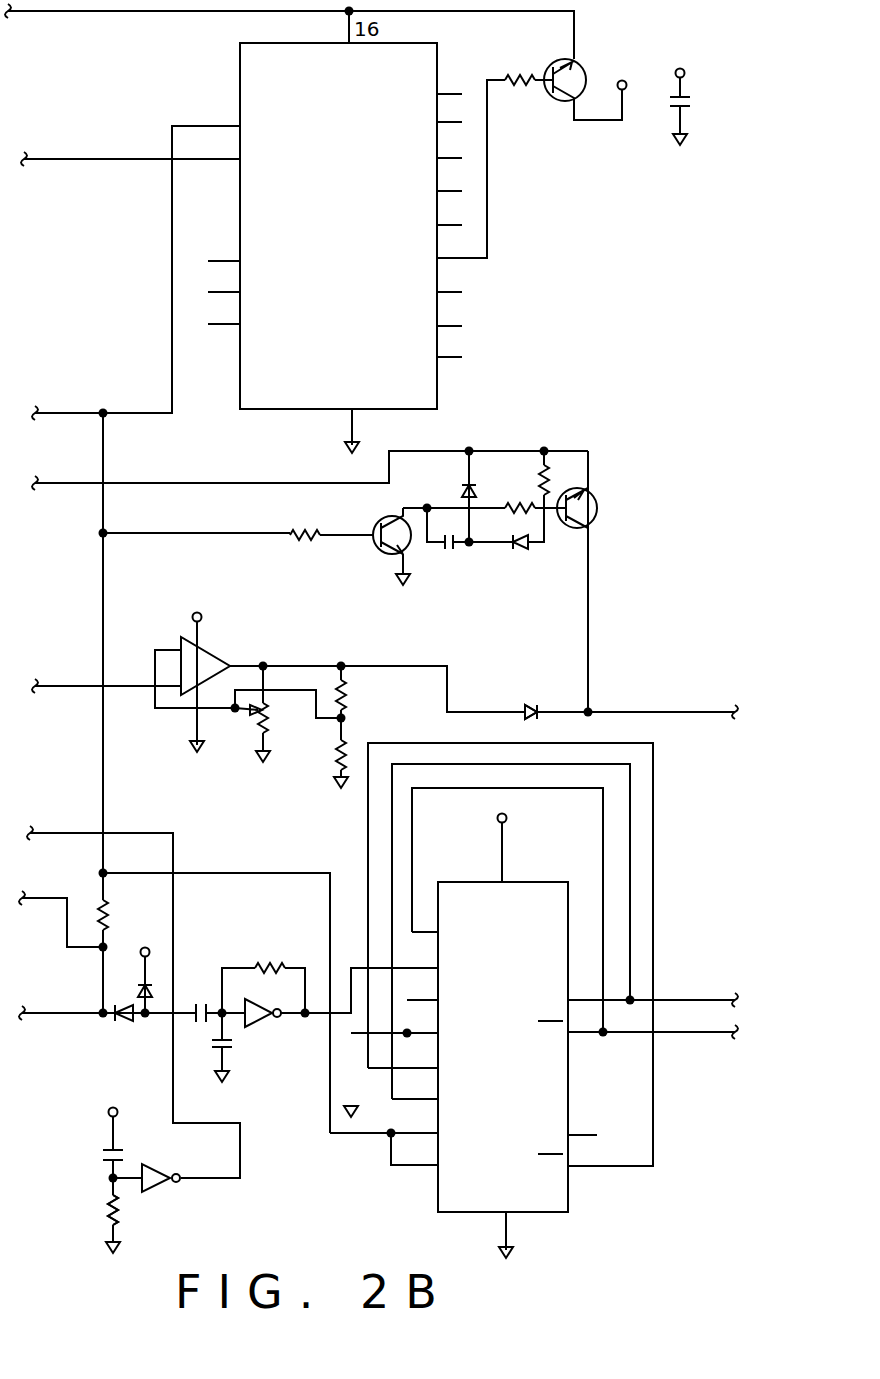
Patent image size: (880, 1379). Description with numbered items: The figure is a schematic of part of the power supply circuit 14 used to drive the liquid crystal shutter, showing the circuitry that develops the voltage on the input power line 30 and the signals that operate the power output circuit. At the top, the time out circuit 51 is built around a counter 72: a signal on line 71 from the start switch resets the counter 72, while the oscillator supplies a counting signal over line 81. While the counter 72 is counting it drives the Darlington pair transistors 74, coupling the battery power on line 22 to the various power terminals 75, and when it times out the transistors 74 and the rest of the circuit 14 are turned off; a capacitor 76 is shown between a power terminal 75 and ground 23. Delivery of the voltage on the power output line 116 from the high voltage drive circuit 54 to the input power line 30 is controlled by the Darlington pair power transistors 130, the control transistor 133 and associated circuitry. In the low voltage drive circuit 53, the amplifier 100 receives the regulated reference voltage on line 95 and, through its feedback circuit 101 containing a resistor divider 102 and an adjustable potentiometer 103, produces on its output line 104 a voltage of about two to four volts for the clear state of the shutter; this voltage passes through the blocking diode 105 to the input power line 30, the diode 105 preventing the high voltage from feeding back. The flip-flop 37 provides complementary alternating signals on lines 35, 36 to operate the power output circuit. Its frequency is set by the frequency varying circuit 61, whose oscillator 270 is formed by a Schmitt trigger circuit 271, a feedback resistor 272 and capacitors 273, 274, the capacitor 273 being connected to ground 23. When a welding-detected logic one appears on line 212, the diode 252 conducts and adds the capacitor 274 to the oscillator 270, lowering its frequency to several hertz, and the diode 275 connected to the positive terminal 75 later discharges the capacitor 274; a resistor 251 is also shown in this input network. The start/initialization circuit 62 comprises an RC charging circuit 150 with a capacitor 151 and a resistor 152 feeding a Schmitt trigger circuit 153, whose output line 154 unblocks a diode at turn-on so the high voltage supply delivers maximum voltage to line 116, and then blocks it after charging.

The line 22 is at (62, 12).
The power supply circuit 14 is at (557, 325).
The high voltage drive circuit 54 is at (514, 396).
The line 71 is at (200, 125).
The line 81 is at (122, 158).
The counter 72 is at (437, 172).
The time out circuit 51 is at (545, 32).
The Darlington pair transistors 74 is at (552, 102).
The power terminals 75 is at (626, 90).
The capacitor 76 is at (688, 110).
The ground 23 is at (683, 140).
The power output line 116 is at (70, 484).
The low voltage drive circuit 53 is at (553, 633).
The control transistor 133 is at (388, 516).
The Darlington pair power transistors 130 is at (598, 504).
The amplifier 100 is at (238, 600).
The line 95 is at (72, 687).
The adjustable potentiometer 103 is at (258, 720).
The feedback circuit 101 is at (305, 765).
The output line 104 is at (450, 672).
The resistor divider 102 is at (357, 716).
The blocking diode 105 is at (531, 705).
The input power line 30 is at (676, 714).
The flip-flop 37 is at (563, 1190).
The line 35 is at (643, 1000).
The line 36 is at (718, 1034).
The frequency varying circuit 61 is at (320, 1072).
The output line 154 is at (72, 834).
The oscillator 270 is at (292, 897).
The resistor 251 is at (143, 893).
The diode 275 is at (143, 993).
The line 212 is at (101, 1018).
The diode 252 is at (152, 1048).
The capacitor 274 is at (208, 1005).
The feedback resistor 272 is at (290, 965).
The Schmitt trigger circuit 271 is at (265, 1020).
The capacitor 273 is at (232, 1047).
The RC charging circuit 150 is at (126, 1122).
The capacitor 151 is at (106, 1156).
The resistor 152 is at (108, 1203).
The Schmitt trigger circuit 153 is at (180, 1160).
The start/initialization circuit 62 is at (250, 1166).